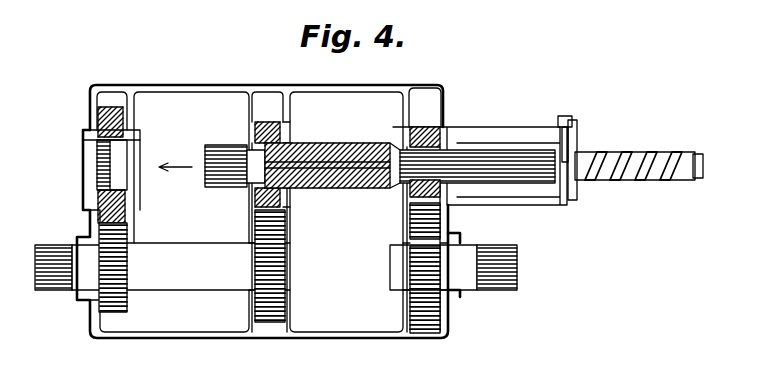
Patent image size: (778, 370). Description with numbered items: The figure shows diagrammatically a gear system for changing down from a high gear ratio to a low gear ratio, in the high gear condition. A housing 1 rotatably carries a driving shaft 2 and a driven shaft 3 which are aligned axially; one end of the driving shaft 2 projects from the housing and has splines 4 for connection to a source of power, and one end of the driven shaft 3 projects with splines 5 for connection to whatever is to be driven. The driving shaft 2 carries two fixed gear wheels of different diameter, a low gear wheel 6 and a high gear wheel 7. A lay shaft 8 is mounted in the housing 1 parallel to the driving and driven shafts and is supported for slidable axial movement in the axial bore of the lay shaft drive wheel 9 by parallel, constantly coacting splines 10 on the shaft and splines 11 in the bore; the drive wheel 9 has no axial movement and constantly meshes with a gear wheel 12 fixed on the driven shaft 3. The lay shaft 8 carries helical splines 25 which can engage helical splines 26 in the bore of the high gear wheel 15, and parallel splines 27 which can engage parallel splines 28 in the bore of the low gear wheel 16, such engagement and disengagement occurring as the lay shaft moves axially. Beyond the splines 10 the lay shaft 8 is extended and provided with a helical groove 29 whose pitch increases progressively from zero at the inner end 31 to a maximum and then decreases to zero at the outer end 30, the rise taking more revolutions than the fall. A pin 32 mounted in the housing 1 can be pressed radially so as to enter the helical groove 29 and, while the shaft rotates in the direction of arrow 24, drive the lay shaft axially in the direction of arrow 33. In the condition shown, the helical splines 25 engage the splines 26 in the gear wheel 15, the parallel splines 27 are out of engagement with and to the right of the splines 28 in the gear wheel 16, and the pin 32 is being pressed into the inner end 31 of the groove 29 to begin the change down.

The housing 1 is at (199, 88).
The driving shaft 2 is at (191, 266).
The driven shaft 3 is at (433, 267).
The splines 4 is at (59, 282).
The splines 5 is at (519, 265).
The low gear wheel 6 is at (115, 311).
The high gear wheel 7 is at (270, 281).
The lay shaft 8 is at (400, 157).
The lay shaft drive wheel 9 is at (441, 209).
The splines 10 is at (392, 186).
The splines 11 is at (446, 128).
The gear wheel 12 is at (420, 267).
The high gear wheel 15 is at (255, 126).
The low gear wheel 16 is at (124, 127).
The arrow 24 is at (349, 197).
The helical splines 25 is at (365, 192).
The helical splines 26 is at (290, 136).
The parallel splines 27 is at (222, 188).
The parallel splines 28 is at (99, 164).
The helical groove 29 is at (621, 184).
The outer end 30 is at (688, 176).
The inner end 31 is at (573, 199).
The pin 32 is at (576, 143).
The arrow 33 is at (181, 168).